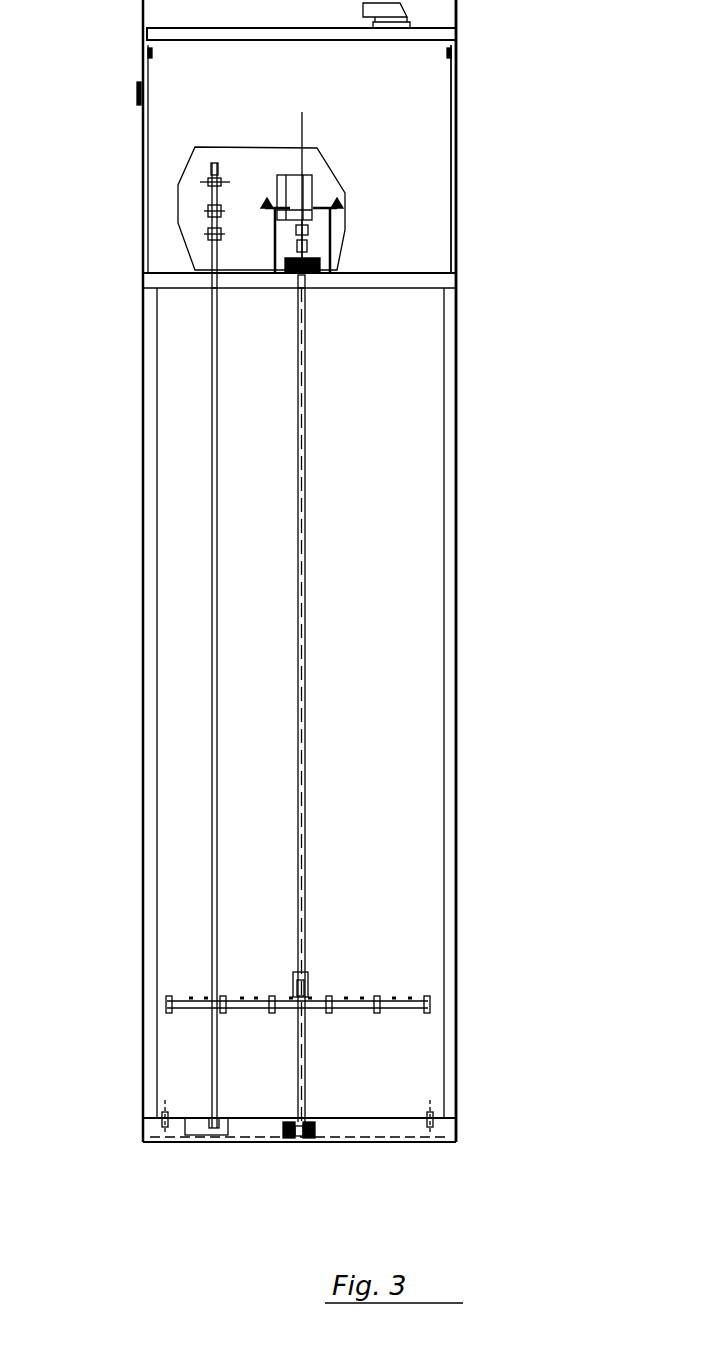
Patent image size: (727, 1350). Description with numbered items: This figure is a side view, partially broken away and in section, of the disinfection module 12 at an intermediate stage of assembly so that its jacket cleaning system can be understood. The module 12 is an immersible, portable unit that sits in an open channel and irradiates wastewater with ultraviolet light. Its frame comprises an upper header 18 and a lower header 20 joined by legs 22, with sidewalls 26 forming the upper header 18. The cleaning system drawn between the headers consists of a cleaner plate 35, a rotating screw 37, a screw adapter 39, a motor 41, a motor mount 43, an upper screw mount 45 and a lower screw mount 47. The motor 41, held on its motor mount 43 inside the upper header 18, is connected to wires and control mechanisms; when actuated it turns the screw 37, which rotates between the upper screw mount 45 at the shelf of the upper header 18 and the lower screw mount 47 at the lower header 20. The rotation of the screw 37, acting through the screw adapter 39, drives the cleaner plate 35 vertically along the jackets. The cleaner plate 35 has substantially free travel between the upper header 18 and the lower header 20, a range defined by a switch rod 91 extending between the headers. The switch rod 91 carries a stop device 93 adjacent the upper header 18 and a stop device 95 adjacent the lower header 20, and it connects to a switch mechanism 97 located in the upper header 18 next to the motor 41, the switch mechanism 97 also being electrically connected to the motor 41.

The disinfection module 12 is at (482, 302).
The upper header 18 is at (137, 78).
The lower header 20 is at (408, 1143).
The legs 22 is at (458, 700).
The sidewalls 26 is at (458, 77).
The cleaner plate 35 is at (402, 1010).
The rotating screw 37 is at (303, 948).
The screw adapter 39 is at (310, 992).
The motor 41 is at (313, 182).
The motor mount 43 is at (327, 237).
The upper screw mount 45 is at (293, 273).
The lower screw mount 47 is at (287, 1140).
The switch rod 91 is at (210, 775).
The stop device 93 is at (210, 275).
The stop device 95 is at (212, 1117).
The switch mechanism 97 is at (208, 213).